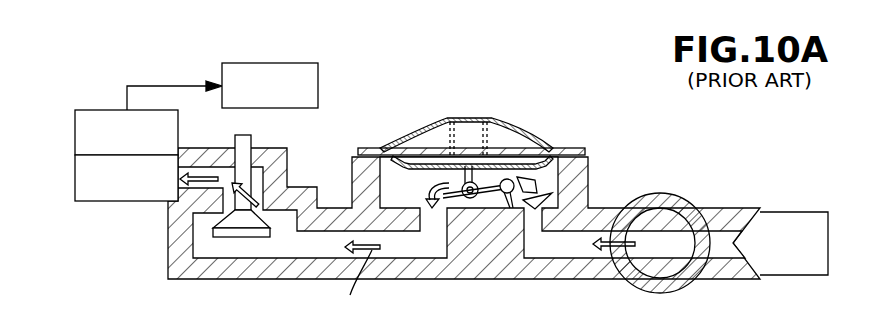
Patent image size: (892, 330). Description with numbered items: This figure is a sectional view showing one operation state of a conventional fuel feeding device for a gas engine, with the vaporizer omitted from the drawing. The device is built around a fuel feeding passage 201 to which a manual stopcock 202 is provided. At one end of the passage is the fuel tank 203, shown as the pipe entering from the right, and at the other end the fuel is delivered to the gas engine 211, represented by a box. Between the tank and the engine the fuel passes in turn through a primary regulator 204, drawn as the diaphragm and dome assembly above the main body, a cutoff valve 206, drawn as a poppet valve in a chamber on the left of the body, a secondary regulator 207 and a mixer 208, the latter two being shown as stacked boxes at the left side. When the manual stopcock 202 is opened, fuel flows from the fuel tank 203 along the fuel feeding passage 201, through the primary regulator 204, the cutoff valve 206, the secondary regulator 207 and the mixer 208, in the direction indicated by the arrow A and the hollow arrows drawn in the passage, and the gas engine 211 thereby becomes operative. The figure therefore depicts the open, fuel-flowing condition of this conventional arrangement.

The fuel feeding passage 201 is at (577, 257).
The manual stopcock 202 is at (657, 194).
The fuel tank 203 is at (788, 211).
The primary regulator 204 is at (532, 122).
The cutoff valve 206 is at (243, 136).
The secondary regulator 207 is at (122, 202).
The mixer 208 is at (97, 110).
The gas engine 211 is at (320, 75).
The arrow A is at (357, 284).